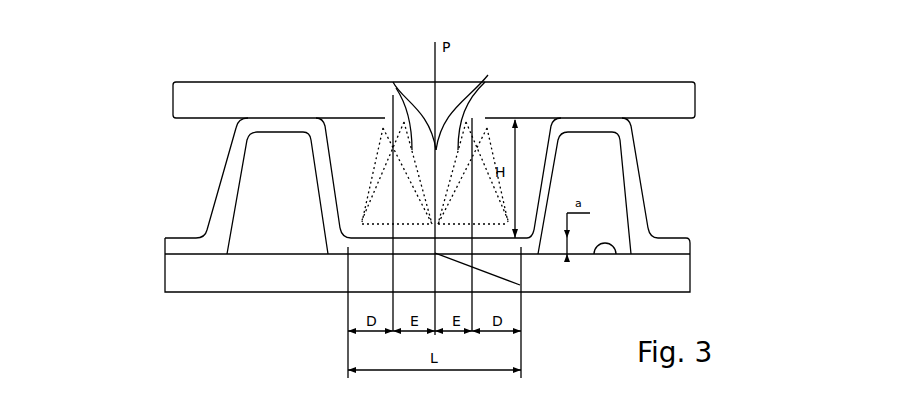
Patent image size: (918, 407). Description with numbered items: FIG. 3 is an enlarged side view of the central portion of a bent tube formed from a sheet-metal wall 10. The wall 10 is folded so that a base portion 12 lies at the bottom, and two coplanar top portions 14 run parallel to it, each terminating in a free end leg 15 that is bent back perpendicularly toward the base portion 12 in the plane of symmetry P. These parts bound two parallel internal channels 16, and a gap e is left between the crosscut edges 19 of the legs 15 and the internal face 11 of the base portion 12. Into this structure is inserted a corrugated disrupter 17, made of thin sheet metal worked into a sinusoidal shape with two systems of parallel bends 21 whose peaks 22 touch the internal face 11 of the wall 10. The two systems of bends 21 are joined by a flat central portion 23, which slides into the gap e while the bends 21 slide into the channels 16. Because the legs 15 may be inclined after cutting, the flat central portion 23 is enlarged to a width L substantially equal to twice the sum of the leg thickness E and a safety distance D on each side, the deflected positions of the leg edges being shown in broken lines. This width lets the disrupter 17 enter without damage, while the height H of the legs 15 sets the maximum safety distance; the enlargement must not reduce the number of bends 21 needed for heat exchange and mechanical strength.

The wall 10 is at (213, 292).
The internal face 11 is at (188, 120).
The base portion 12 is at (672, 276).
The top portion 14 is at (197, 92).
The free end leg 15 is at (393, 82).
The internal channel 16 is at (217, 156).
The disrupter 17 is at (210, 207).
The crosscut edge 19 is at (478, 258).
The bend 21 is at (308, 174).
The peak 22 is at (583, 122).
The flat central portion 23 is at (372, 250).